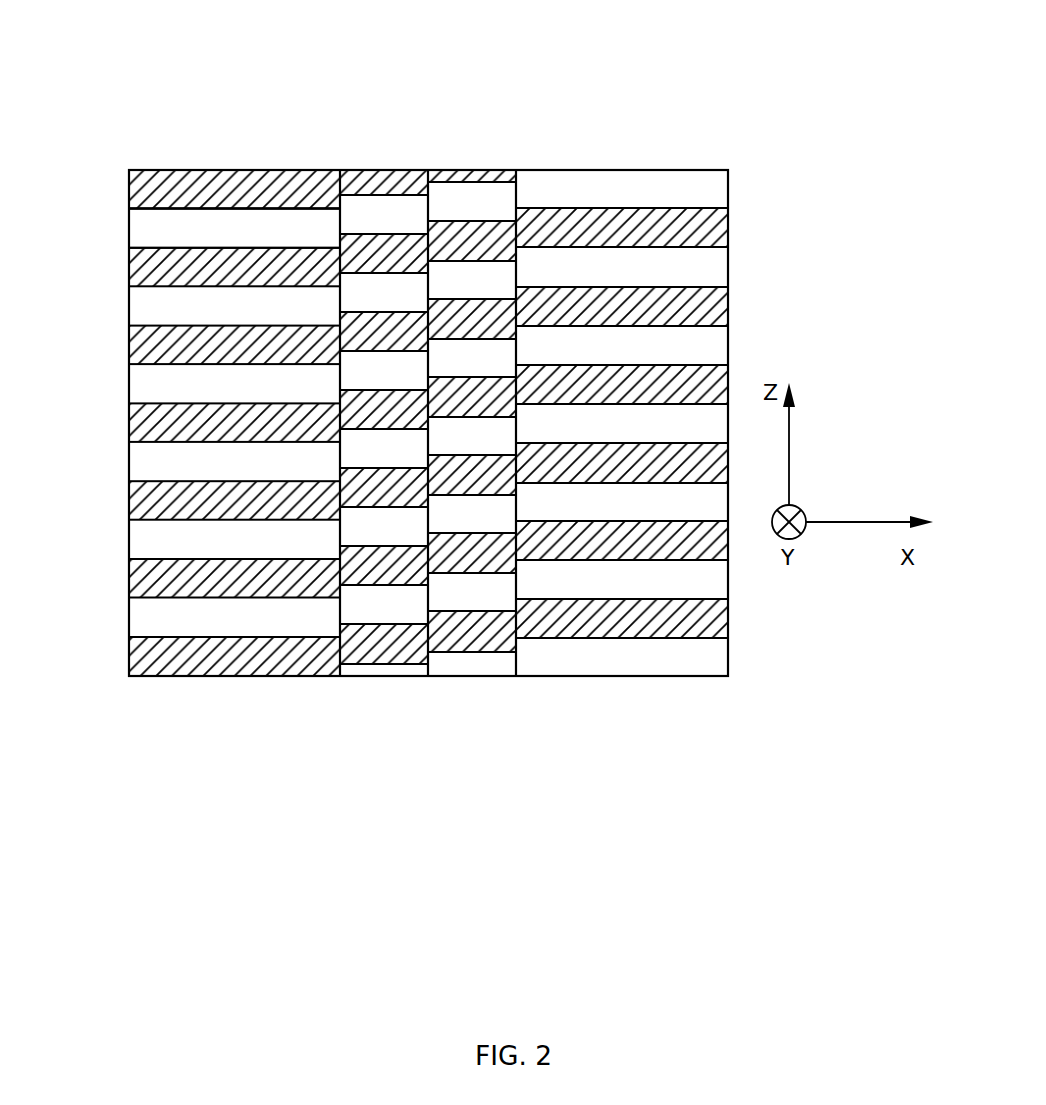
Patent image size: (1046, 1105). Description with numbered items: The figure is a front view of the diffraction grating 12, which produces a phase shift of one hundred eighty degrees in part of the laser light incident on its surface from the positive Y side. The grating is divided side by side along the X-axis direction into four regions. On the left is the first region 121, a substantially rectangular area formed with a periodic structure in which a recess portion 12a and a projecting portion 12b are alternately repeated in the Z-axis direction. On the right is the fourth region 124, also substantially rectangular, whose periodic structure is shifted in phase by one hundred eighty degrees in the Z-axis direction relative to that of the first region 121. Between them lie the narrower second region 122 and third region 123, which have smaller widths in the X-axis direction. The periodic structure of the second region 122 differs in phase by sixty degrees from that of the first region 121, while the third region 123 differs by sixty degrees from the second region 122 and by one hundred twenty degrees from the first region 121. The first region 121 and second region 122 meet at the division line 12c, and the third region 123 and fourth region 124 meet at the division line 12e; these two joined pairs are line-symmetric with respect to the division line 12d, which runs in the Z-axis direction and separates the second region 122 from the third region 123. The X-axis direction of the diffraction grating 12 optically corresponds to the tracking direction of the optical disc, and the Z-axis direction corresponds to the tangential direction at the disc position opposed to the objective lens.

The diffraction grating 12 is at (679, 115).
The recess portion 12a is at (129, 207).
The projecting portion 12b is at (129, 231).
The division line 12c is at (339, 170).
The division line 12d is at (428, 170).
The division line 12e is at (516, 170).
The first region 121 is at (270, 153).
The second region 122 is at (384, 153).
The third region 123 is at (456, 153).
The fourth region 124 is at (566, 153).